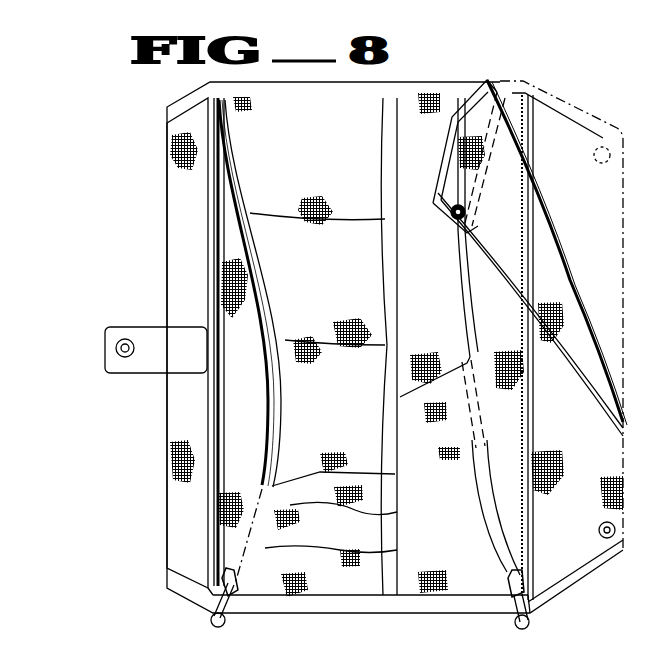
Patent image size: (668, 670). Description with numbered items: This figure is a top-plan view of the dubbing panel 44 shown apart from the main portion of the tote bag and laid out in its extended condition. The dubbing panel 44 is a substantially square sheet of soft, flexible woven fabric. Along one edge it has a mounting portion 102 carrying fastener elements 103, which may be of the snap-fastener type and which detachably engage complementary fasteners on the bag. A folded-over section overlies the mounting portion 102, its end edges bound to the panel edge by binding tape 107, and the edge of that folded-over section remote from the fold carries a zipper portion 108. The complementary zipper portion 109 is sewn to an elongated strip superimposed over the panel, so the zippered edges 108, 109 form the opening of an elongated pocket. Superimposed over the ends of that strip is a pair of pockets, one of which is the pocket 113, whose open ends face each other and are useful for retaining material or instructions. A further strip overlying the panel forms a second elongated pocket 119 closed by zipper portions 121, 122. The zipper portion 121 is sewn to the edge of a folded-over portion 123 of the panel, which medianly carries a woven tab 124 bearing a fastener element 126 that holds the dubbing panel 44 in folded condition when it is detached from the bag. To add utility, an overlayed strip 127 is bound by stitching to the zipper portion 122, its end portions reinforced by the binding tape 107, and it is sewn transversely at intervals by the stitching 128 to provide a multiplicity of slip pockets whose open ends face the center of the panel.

The dubbing panel 44 is at (162, 247).
The mounting portion 102 is at (503, 253).
The fastener elements 103 is at (456, 222).
The binding tape 107 is at (455, 602).
The zipper portion 108 is at (534, 540).
The complementary zipper portion 109 is at (480, 500).
The pocket 113 is at (436, 143).
The second elongated pocket 119 is at (269, 417).
The zipper portion 121 is at (215, 208).
The zipper portion 122 is at (262, 280).
The folded-over portion 123 is at (190, 530).
The woven tab 124 is at (153, 364).
The fastener element 126 is at (121, 345).
The overlayed strip 127 is at (330, 153).
The transverse stitching 128 is at (333, 443).